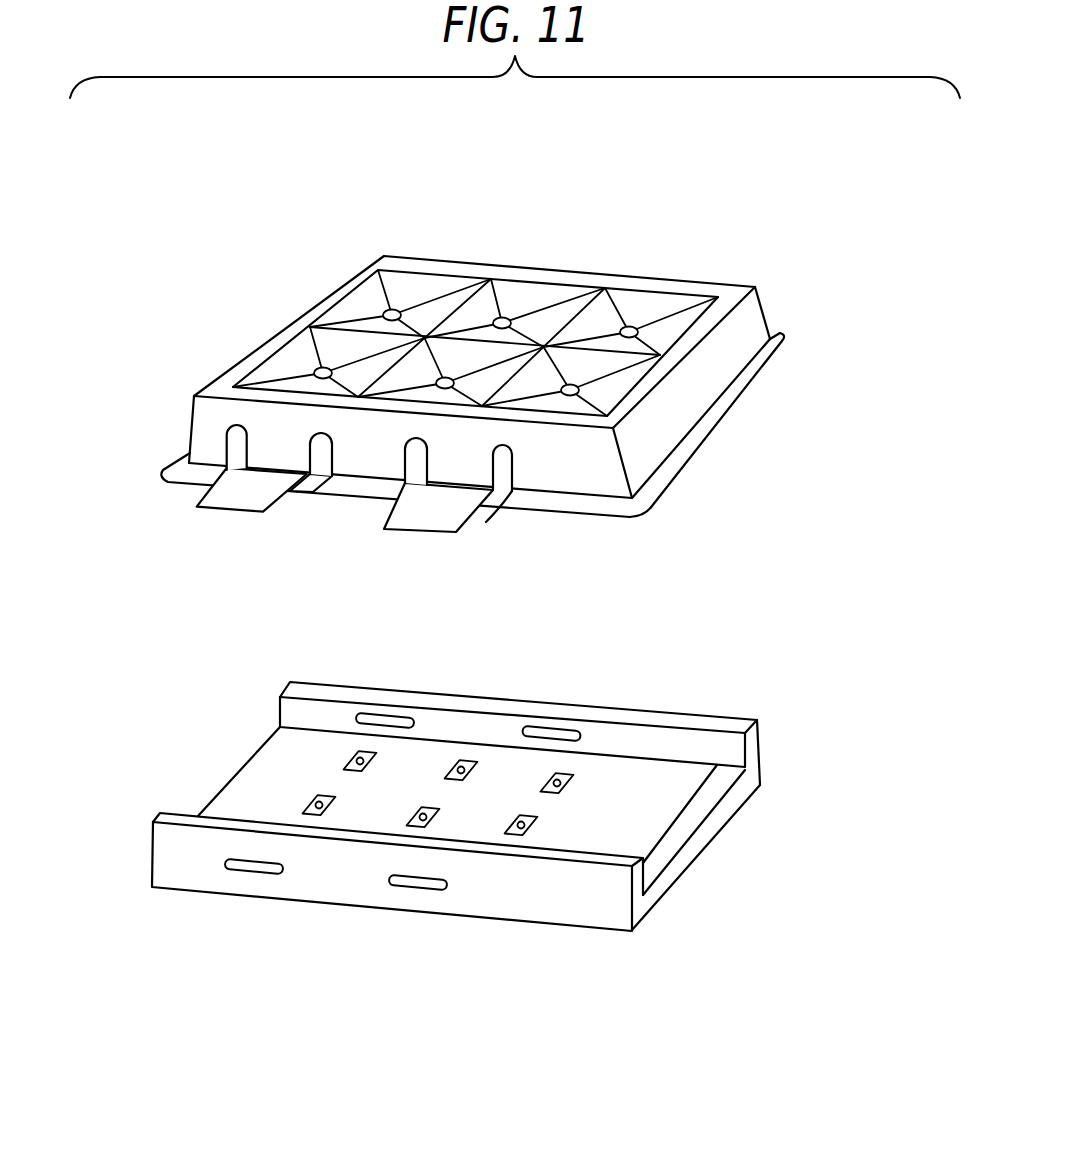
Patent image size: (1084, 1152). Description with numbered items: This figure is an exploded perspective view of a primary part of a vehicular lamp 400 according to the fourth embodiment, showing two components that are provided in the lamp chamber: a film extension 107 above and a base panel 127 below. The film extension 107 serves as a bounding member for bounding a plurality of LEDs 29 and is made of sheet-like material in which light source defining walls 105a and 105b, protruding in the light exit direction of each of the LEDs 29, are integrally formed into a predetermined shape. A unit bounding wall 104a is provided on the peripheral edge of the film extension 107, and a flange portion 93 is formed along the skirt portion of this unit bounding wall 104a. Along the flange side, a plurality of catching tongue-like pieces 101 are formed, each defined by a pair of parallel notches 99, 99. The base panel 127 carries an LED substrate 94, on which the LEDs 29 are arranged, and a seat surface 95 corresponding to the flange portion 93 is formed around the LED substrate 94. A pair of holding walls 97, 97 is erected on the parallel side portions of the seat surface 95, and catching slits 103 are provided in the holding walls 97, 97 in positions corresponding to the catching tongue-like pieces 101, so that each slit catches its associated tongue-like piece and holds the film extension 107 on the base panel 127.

The vehicular lamp 400 is at (321, 284).
The film extension 107 is at (712, 269).
The unit bounding wall 104a is at (597, 469).
The flange portion 93 is at (668, 503).
The light source defining wall 105a is at (577, 312).
The light source defining wall 105b is at (478, 312).
The notch 99 is at (405, 477).
The catching tongue-like piece 101 is at (243, 490).
The base panel 127 is at (717, 707).
The LED substrate 94 is at (682, 874).
The seat surface 95 is at (695, 815).
The holding wall 97 is at (363, 690).
The catching slit 103 is at (398, 717).
The LED 29 is at (345, 762).